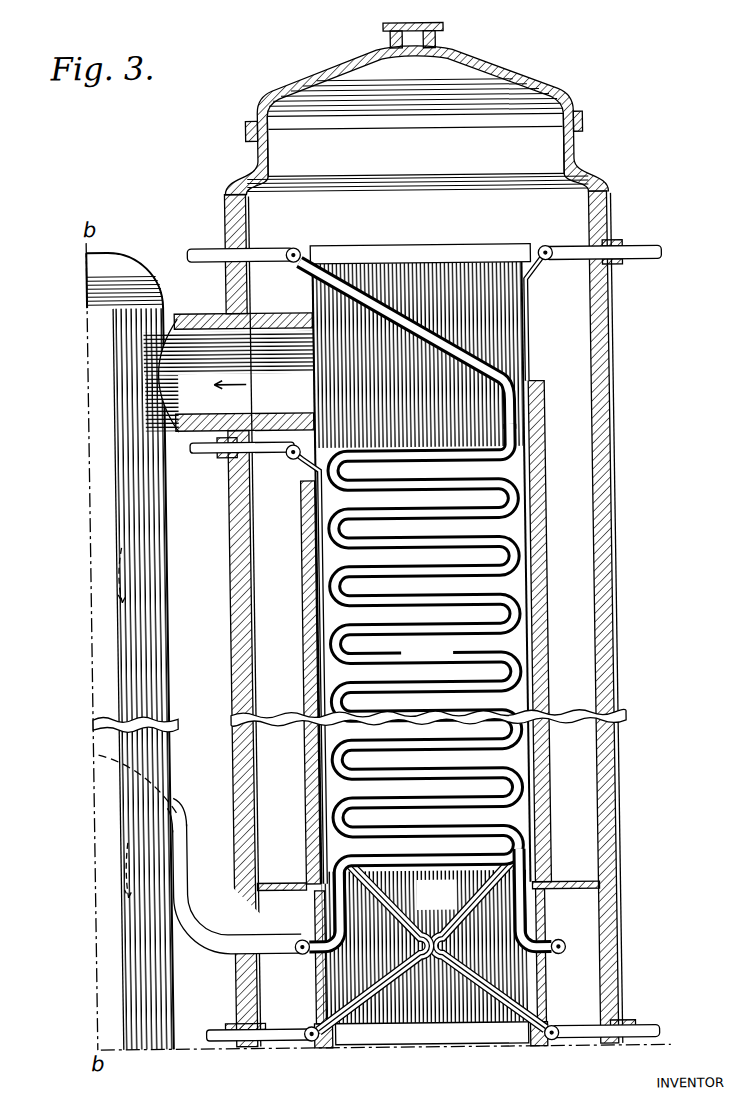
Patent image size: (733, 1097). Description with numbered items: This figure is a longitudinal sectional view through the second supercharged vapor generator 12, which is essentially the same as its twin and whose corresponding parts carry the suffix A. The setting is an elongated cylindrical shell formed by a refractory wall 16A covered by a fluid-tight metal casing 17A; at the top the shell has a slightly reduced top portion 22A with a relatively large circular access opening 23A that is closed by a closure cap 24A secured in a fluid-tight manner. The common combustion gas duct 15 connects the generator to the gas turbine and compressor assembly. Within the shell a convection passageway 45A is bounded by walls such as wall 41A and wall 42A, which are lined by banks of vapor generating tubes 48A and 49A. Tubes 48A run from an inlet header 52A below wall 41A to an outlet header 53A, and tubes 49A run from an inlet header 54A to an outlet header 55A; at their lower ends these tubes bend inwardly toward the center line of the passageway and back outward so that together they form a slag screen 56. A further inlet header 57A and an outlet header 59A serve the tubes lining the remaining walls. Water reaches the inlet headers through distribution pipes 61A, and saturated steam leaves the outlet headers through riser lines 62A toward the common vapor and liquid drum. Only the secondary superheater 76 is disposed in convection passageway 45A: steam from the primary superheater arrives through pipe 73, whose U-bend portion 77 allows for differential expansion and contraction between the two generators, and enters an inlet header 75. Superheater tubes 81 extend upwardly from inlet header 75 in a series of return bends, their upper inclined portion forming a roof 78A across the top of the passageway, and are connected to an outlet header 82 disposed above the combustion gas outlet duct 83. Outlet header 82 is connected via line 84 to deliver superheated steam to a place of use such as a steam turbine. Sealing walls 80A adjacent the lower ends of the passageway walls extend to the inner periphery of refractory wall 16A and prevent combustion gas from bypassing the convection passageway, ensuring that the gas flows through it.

The supercharged vapor generator 12 is at (663, 432).
The common combustion gas duct 15 is at (166, 570).
The refractory wall 16A is at (612, 303).
The fluid-tight metal casing 17A is at (614, 333).
The top portion 22A is at (564, 147).
The access opening 23A is at (447, 160).
The closure cap 24A is at (521, 53).
The wall 41A is at (298, 600).
The wall 42A is at (543, 530).
The convection passageway 45A is at (411, 685).
The vapor generating tubes 48A is at (315, 632).
The vapor generating tubes 49A is at (530, 348).
The inlet header 52A is at (301, 1041).
The outlet header 53A is at (289, 459).
The inlet header 54A is at (541, 1042).
The outlet header 55A is at (548, 246).
The slag screen 56 is at (435, 923).
The inlet header 57A is at (422, 1045).
The outlet header 59A is at (434, 252).
The distribution pipes 61A is at (630, 1027).
The riser lines 62A is at (640, 247).
The pipe 73 is at (210, 957).
The inlet header 75 is at (291, 955).
The convection superheater 76 is at (516, 679).
The U-bend portion 77 is at (172, 811).
The roof 78A is at (468, 342).
The sealing walls 80A is at (263, 880).
The superheater tubes 81 is at (412, 445).
The outlet header 82 is at (296, 245).
The combustion gas outlet duct 83 is at (269, 311).
The line 84 is at (204, 246).